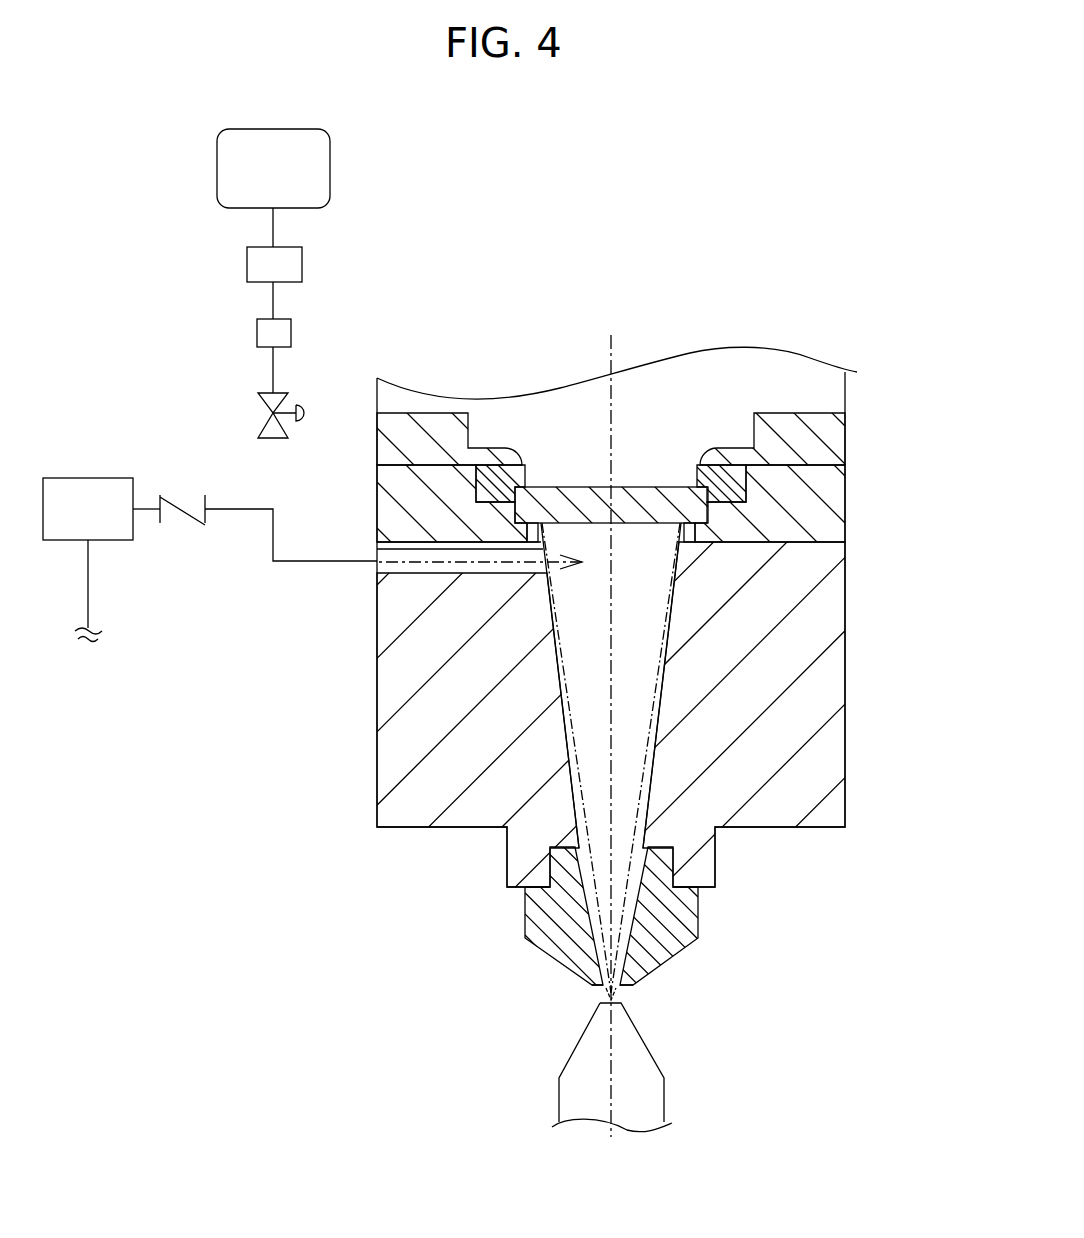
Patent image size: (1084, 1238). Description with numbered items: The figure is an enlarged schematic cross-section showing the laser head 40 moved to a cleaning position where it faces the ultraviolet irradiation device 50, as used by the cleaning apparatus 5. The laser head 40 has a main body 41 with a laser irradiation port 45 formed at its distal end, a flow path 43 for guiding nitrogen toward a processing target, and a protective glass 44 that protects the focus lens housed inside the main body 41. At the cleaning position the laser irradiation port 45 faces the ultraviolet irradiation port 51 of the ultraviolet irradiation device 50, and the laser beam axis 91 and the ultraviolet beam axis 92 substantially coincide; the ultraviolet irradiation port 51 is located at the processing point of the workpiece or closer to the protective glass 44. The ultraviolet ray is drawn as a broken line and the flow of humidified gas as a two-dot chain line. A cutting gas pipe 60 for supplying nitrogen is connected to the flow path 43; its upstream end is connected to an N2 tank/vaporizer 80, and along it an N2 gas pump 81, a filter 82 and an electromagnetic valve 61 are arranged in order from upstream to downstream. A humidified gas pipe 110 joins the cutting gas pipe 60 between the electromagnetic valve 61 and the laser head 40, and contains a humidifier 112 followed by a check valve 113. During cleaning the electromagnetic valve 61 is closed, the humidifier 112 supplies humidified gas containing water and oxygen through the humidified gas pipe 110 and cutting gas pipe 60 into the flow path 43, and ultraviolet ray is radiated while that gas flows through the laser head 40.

The cleaning apparatus 5 is at (518, 1050).
The laser head 40 is at (634, 677).
The main body 41 is at (848, 390).
The flow path 43 is at (553, 680).
The protective glass 44 is at (651, 488).
The laser irradiation port 45 is at (603, 992).
The ultraviolet irradiation device 50 is at (650, 1107).
The ultraviolet irradiation port 51 is at (623, 992).
The cutting gas pipe 60 is at (330, 560).
The electromagnetic valve 61 is at (255, 416).
The N2 tank/vaporizer 80 is at (333, 165).
The N2 gas pump 81 is at (305, 262).
The filter 82 is at (293, 330).
The laser beam axis 91 is at (608, 428).
The ultraviolet beam axis 92 is at (612, 622).
The humidified gas pipe 110 is at (245, 512).
The humidifier 112 is at (88, 478).
The check valve 113 is at (188, 525).